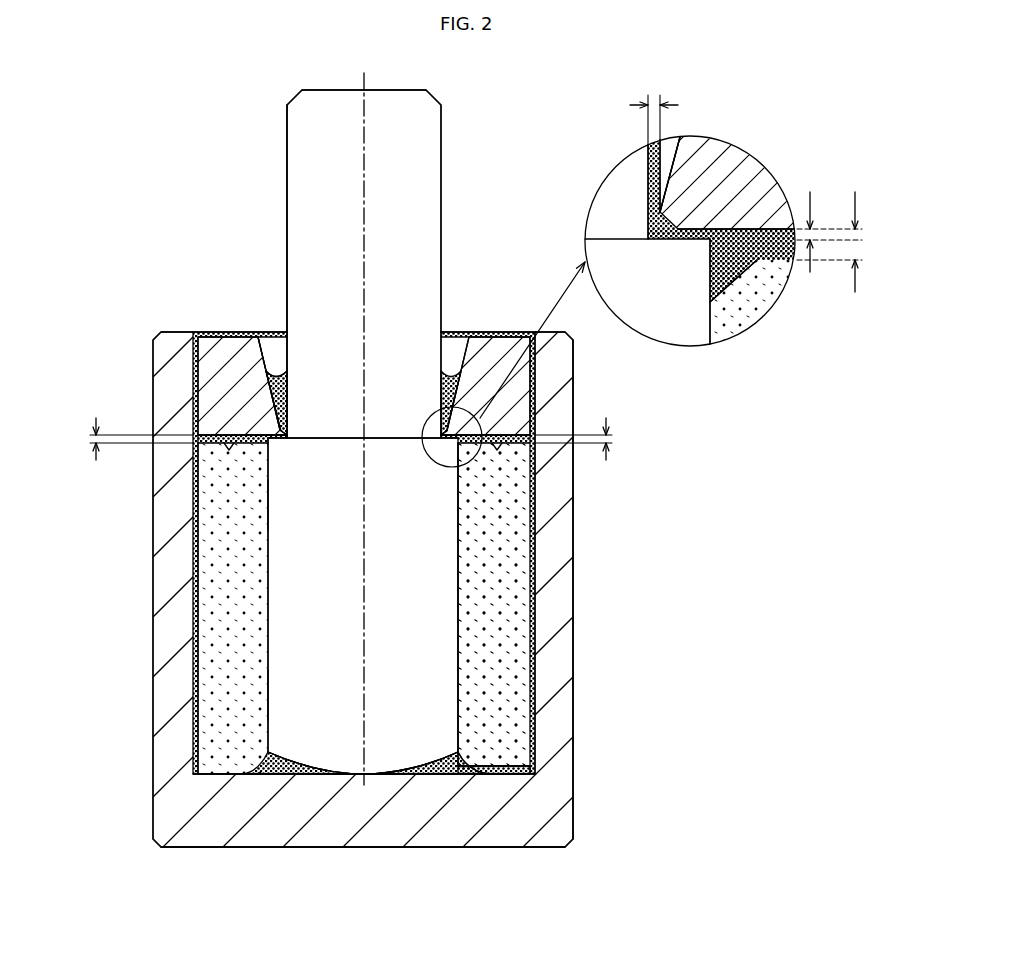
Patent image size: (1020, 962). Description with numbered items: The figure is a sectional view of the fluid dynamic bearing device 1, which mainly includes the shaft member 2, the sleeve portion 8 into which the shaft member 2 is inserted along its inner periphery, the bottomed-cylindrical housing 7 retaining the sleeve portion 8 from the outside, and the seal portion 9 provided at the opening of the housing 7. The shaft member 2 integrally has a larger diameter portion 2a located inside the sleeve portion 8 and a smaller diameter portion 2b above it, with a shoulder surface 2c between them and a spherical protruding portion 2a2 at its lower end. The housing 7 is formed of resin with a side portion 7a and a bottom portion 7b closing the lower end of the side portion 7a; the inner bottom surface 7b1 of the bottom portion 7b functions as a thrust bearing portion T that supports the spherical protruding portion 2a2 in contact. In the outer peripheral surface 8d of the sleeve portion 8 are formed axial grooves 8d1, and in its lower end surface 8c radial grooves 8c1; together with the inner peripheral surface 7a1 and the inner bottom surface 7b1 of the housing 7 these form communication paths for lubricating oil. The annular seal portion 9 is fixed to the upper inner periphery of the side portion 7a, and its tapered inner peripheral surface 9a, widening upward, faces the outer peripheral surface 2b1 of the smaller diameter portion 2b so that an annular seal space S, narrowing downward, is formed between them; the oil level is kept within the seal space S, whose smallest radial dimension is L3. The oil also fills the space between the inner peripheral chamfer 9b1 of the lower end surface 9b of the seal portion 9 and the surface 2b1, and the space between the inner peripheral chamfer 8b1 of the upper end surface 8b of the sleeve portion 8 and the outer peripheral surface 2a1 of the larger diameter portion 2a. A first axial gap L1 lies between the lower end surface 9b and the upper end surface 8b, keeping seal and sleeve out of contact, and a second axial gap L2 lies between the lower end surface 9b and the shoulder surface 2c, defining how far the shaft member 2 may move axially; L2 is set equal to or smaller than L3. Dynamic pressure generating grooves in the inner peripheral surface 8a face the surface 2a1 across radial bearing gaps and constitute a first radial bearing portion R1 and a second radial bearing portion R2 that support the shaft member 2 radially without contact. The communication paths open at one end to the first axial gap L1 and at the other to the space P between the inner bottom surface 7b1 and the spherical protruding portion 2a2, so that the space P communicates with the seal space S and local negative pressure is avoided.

The fluid dynamic bearing device 1 is at (495, 103).
The shaft member 2 is at (447, 145).
The larger diameter portion 2a is at (305, 582).
The outer peripheral surface of the larger diameter portion 2a1 is at (265, 642).
The spherical protruding portion 2a2 is at (300, 772).
The smaller diameter portion 2b is at (318, 197).
The outer peripheral surface of the smaller diameter portion 2b1 is at (285, 239).
The shoulder surface 2c is at (233, 392).
The housing 7 is at (574, 628).
The side portion 7a is at (555, 660).
The inner peripheral surface of the housing 7a1 is at (522, 500).
The bottom portion 7b is at (430, 835).
The inner bottom surface of the housing 7b1 is at (244, 776).
The sleeve portion 8 is at (500, 555).
The inner peripheral surface of the sleeve portion 8a is at (448, 590).
The upper end surface of the sleeve portion 8b is at (212, 431).
The inner peripheral chamfer of the upper end surface of the sleeve portion 8b1 is at (708, 285).
The lower end surface of the sleeve portion 8c is at (243, 777).
The radial grooves 8c1 is at (510, 770).
The outer peripheral surface of the sleeve portion 8d is at (535, 700).
The axial grooves 8d1 is at (196, 770).
The seal portion 9 is at (548, 394).
The inner peripheral surface of the seal portion 9a is at (453, 357).
The lower end surface of the seal portion 9b is at (200, 452).
The inner peripheral chamfer of the lower end surface of the seal portion 9b1 is at (648, 229).
The seal space S is at (275, 357).
The thrust bearing portion T is at (356, 770).
The space between the inner bottom surface and the spherical protruding portion P is at (460, 775).
The first radial bearing portion R1 is at (265, 505).
The second radial bearing portion R2 is at (265, 695).
The first axial gap L1 is at (473, 325).
The second axial gap L2 is at (698, 325).
The radial dimension L3 is at (632, 106).